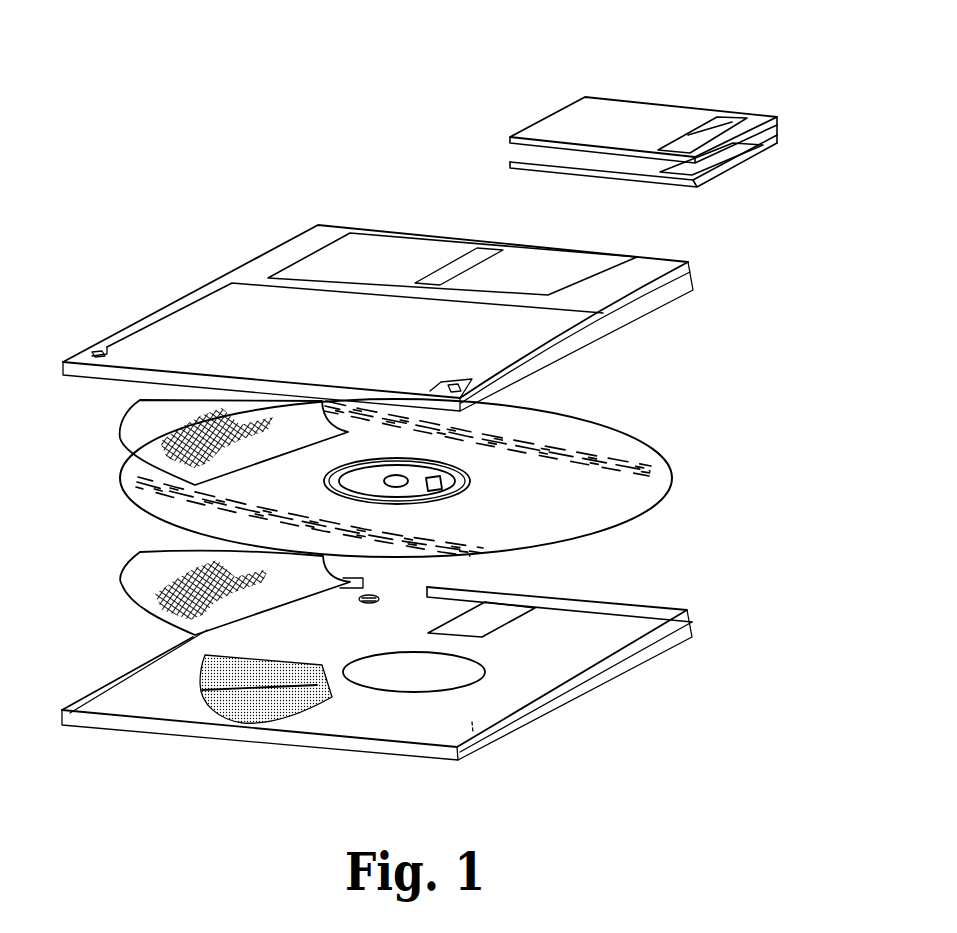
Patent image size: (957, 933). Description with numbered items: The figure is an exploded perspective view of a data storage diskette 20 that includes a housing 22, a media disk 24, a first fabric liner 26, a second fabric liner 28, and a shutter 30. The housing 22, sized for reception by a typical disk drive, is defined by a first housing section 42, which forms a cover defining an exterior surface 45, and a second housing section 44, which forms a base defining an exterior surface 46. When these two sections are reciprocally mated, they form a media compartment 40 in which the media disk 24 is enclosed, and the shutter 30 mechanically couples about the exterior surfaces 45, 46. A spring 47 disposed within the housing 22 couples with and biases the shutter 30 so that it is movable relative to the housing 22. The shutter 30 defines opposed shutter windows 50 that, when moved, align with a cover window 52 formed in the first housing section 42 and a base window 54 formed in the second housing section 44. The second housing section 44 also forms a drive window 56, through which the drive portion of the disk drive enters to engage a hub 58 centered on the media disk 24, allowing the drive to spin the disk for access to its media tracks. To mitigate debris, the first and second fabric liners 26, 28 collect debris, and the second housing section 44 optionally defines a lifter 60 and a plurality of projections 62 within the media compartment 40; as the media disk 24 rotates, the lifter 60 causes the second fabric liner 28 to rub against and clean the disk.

The data storage diskette 20 is at (147, 188).
The housing 22 is at (712, 277).
The media disk 24 is at (122, 487).
The first fabric liner 26 is at (121, 437).
The second fabric liner 28 is at (123, 573).
The shutter 30 is at (639, 110).
The media compartment 40 is at (551, 681).
The first housing section 42 is at (662, 300).
The second housing section 44 is at (548, 705).
The exterior surface 45 is at (665, 270).
The exterior surface 46 is at (480, 742).
The spring 47 is at (418, 582).
The shutter windows 50 is at (700, 123).
The cover window 52 is at (450, 262).
The base window 54 is at (508, 624).
The drive window 56 is at (388, 690).
The hub 58 is at (468, 481).
The lifter 60 is at (203, 690).
The projections 62 is at (227, 703).